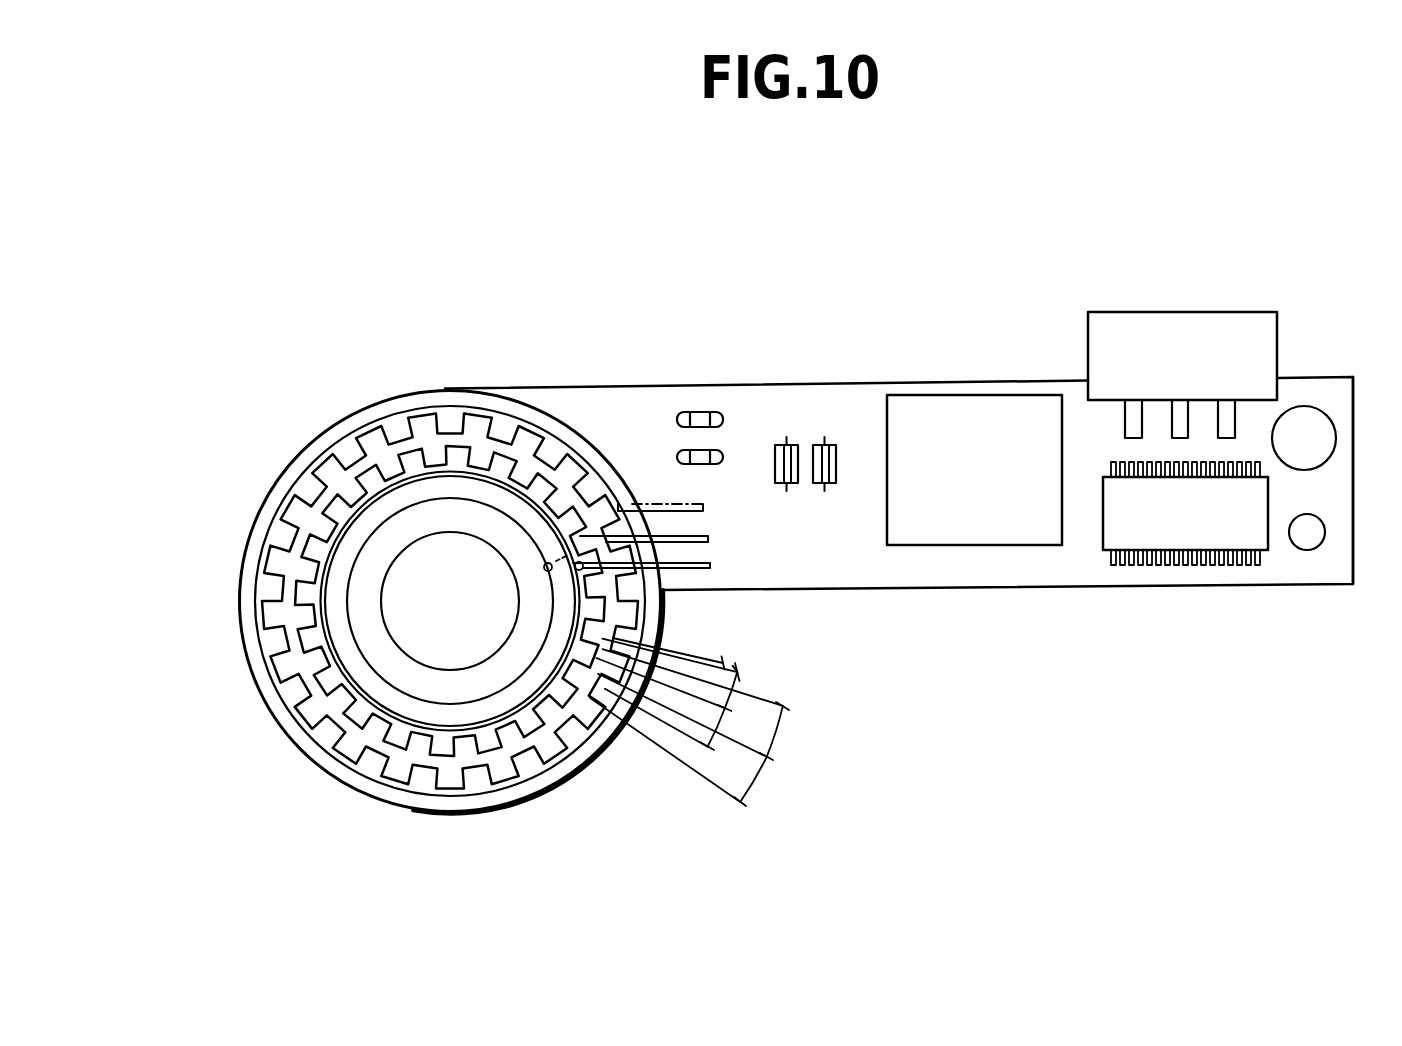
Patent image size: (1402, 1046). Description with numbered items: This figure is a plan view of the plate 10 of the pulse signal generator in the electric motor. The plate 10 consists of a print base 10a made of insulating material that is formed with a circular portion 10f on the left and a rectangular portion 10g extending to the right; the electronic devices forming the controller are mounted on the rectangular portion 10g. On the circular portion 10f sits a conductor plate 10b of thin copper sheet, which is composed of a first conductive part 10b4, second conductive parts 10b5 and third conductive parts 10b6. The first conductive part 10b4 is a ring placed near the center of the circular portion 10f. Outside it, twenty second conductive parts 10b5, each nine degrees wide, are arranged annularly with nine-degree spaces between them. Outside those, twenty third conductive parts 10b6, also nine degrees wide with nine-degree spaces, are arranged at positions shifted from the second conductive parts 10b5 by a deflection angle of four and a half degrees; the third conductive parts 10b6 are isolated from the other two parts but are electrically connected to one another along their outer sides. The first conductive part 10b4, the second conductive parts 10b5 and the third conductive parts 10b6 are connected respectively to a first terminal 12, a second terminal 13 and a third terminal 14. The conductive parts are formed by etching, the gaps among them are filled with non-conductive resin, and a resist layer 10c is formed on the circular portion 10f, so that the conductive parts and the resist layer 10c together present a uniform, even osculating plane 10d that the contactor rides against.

The plate 10 is at (1046, 229).
The print base 10a is at (860, 378).
The conductor plate 10b is at (518, 413).
The first conductive part 10b4 is at (370, 690).
The second conductive parts 10b5 is at (312, 541).
The third conductive parts 10b6 is at (397, 430).
The resist layer 10c is at (428, 765).
The osculating plane 10d is at (594, 757).
The circular portion 10f is at (545, 812).
The rectangular portion 10g is at (1280, 567).
The first terminal 12 is at (708, 541).
The second terminal 13 is at (670, 570).
The third terminal 14 is at (642, 500).